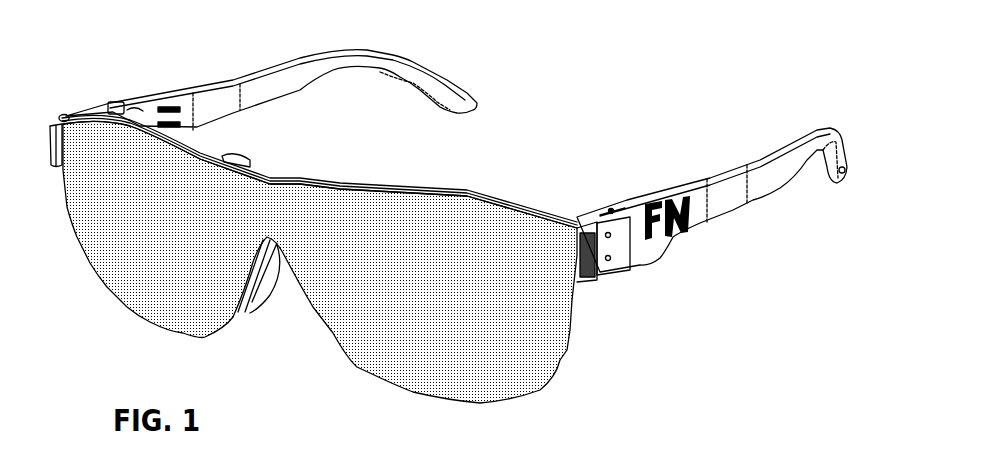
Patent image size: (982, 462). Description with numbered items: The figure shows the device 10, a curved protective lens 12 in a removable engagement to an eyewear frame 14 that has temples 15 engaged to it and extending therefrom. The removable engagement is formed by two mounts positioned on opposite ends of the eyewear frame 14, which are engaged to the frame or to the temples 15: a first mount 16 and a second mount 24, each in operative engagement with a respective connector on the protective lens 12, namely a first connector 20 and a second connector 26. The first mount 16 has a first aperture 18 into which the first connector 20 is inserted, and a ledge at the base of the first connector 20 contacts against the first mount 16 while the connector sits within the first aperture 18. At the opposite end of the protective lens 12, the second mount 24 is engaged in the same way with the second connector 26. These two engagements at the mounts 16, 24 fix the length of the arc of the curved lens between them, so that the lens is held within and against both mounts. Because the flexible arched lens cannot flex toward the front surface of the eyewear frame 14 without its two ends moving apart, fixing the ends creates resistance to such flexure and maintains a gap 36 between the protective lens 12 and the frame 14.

The device 10 is at (620, 355).
The protective lens 12 is at (423, 345).
The eyewear frame 14 is at (457, 187).
The temples 15 is at (233, 80).
The first mount 16 is at (611, 210).
The first aperture 18 is at (577, 217).
The first connector 20 is at (597, 268).
The second mount 24 is at (62, 165).
The second connector 26 is at (63, 118).
The gap 36 is at (235, 156).